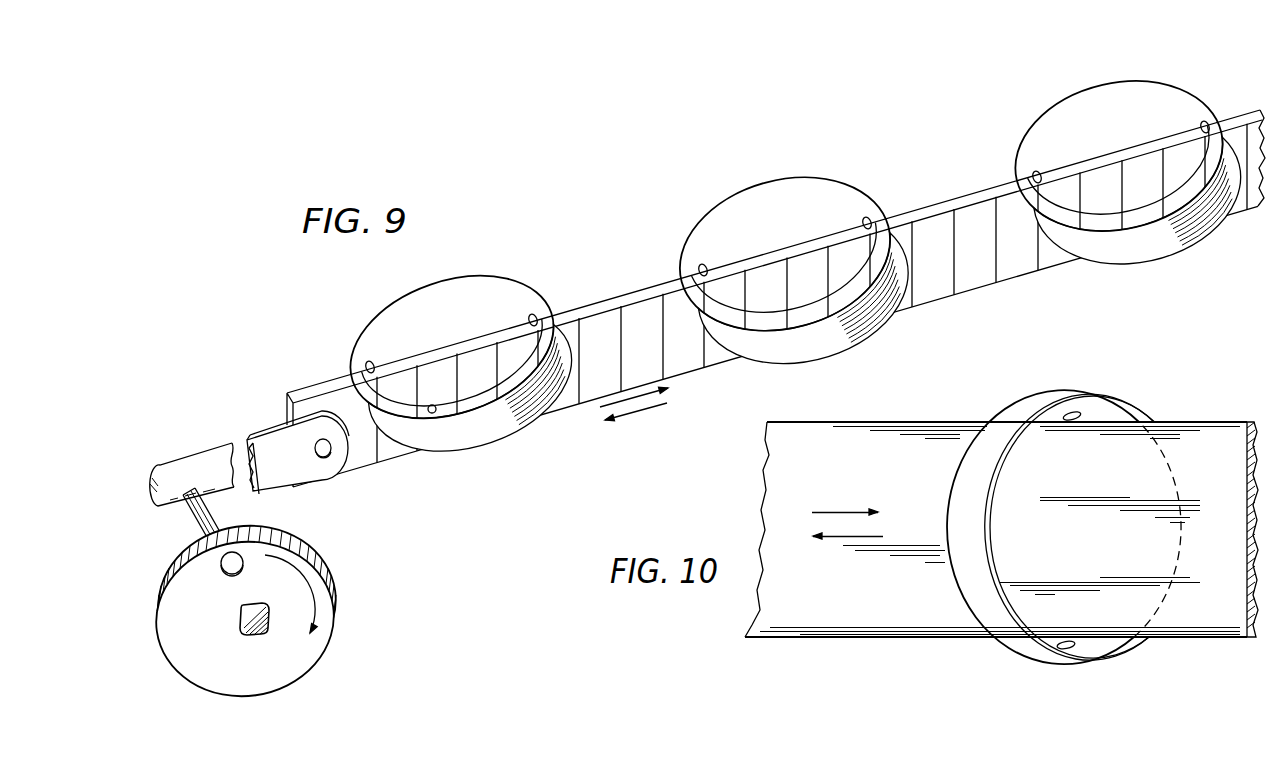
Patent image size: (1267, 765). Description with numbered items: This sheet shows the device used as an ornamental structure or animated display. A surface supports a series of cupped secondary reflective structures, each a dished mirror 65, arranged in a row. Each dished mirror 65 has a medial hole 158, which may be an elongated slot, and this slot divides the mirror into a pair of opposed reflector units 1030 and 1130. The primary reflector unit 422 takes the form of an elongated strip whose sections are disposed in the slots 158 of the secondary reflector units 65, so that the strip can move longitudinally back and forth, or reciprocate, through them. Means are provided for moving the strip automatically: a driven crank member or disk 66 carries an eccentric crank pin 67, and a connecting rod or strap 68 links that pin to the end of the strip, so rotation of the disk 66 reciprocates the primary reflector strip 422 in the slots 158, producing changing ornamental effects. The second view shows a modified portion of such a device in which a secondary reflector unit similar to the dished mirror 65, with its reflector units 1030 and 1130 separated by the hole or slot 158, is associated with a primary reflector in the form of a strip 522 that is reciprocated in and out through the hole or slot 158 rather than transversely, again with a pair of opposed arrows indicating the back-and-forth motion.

In FIG. 9, the primary reflector unit 422 is at (937, 300).
In FIG. 10, the strip 522 is at (870, 640).
In FIG. 9, the secondary reflective structure 65 is at (503, 274).
In FIG. 10, the secondary reflective structure 65 is at (1007, 408).
In FIG. 9, the reflector unit 1030 is at (437, 297).
In FIG. 10, the reflector unit 1030 is at (1050, 647).
In FIG. 9, the reflector unit 1130 is at (511, 397).
In FIG. 10, the reflector unit 1130 is at (1123, 417).
In FIG. 9, the medial hole 158 is at (433, 413).
In FIG. 10, the medial hole 158 is at (1070, 418).
In FIG. 9, the crank member 66 is at (340, 573).
In FIG. 9, the eccentric crank pin 67 is at (195, 523).
In FIG. 9, the connecting rod 68 is at (210, 453).